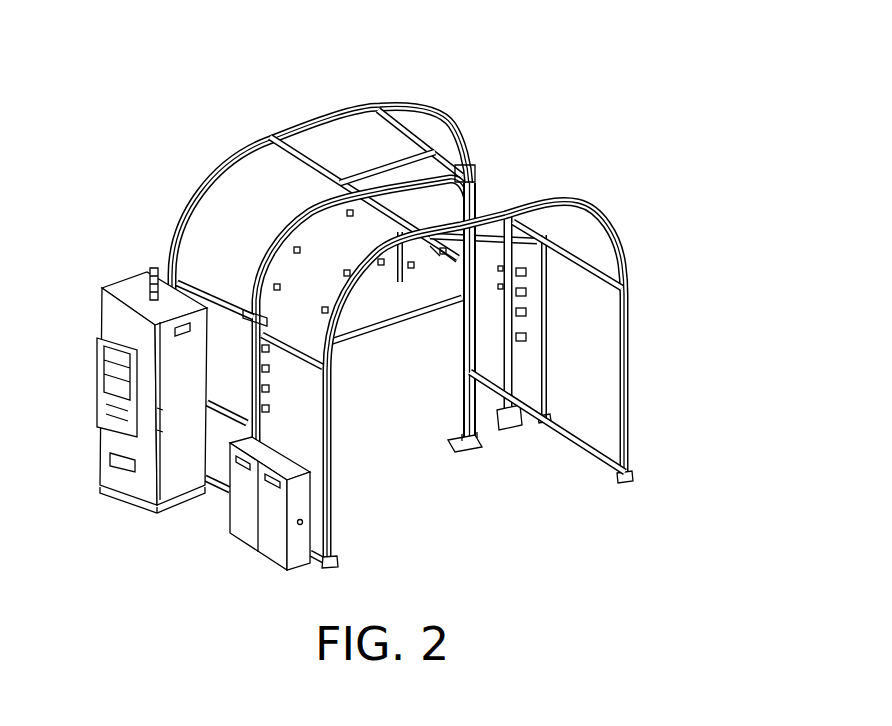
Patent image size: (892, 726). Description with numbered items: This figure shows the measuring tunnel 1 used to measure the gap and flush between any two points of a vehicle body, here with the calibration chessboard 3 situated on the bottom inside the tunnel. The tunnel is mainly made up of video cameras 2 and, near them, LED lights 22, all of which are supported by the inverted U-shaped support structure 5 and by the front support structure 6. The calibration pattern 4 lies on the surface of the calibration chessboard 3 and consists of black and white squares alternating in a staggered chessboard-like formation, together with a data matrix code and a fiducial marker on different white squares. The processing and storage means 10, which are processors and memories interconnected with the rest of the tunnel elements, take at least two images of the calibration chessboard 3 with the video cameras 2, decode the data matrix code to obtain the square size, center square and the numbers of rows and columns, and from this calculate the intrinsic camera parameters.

The measuring tunnel 1 is at (454, 317).
The video cameras 2 is at (523, 292).
The LED lights 22 is at (523, 273).
The calibration chessboard 3 is at (450, 445).
The calibration pattern 4 is at (390, 325).
The inverted U-shaped support structure 5 is at (460, 173).
The front support structure 6 is at (493, 233).
The processing and storage means 10 is at (130, 293).